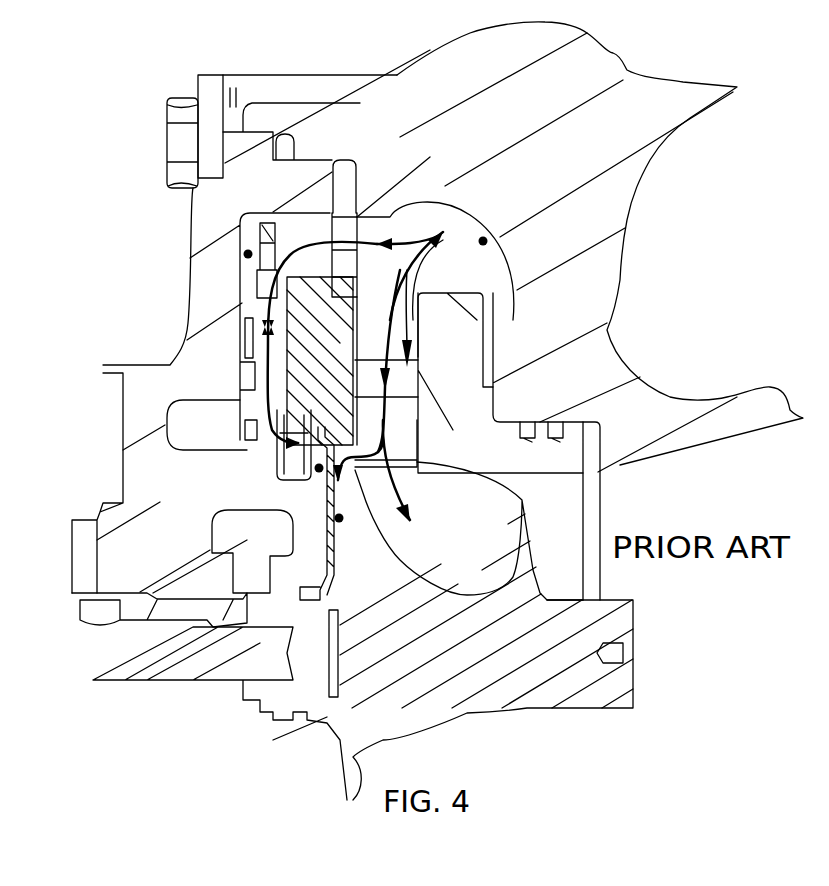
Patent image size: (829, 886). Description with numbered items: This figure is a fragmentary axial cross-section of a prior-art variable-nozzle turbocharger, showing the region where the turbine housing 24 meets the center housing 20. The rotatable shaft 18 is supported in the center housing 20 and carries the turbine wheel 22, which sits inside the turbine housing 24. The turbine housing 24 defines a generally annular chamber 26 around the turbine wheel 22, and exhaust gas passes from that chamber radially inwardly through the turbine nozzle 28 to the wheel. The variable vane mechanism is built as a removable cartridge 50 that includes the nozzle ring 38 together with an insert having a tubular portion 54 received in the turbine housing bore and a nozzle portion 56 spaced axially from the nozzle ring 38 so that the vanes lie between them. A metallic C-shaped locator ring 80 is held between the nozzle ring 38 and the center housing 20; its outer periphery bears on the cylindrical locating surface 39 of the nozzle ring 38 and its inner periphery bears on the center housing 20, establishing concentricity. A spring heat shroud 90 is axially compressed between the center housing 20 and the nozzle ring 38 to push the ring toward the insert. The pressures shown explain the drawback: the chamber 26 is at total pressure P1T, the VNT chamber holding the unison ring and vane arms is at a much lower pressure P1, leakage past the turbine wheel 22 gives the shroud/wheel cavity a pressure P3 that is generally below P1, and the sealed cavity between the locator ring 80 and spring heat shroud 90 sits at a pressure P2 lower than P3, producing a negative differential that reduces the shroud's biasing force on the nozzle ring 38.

The rotatable shaft 18 is at (210, 665).
The center housing 20 is at (163, 383).
The turbine wheel 22 is at (520, 677).
The turbine housing 24 is at (610, 72).
The annular chamber 26 is at (432, 217).
The turbine nozzle 28 is at (480, 225).
The nozzle ring 38 is at (340, 382).
The locating surface 39 is at (300, 430).
The cartridge 50 is at (352, 200).
The tubular portion 54 is at (532, 460).
The nozzle portion 56 is at (457, 357).
The locator ring 80 is at (282, 455).
The spring heat shroud 90 is at (380, 525).
The VNT chamber pressure P1 is at (248, 255).
The total exhaust gas pressure P1T is at (483, 242).
The locator/shroud cavity pressure P2 is at (318, 470).
The shroud/wheel cavity pressure P3 is at (345, 520).